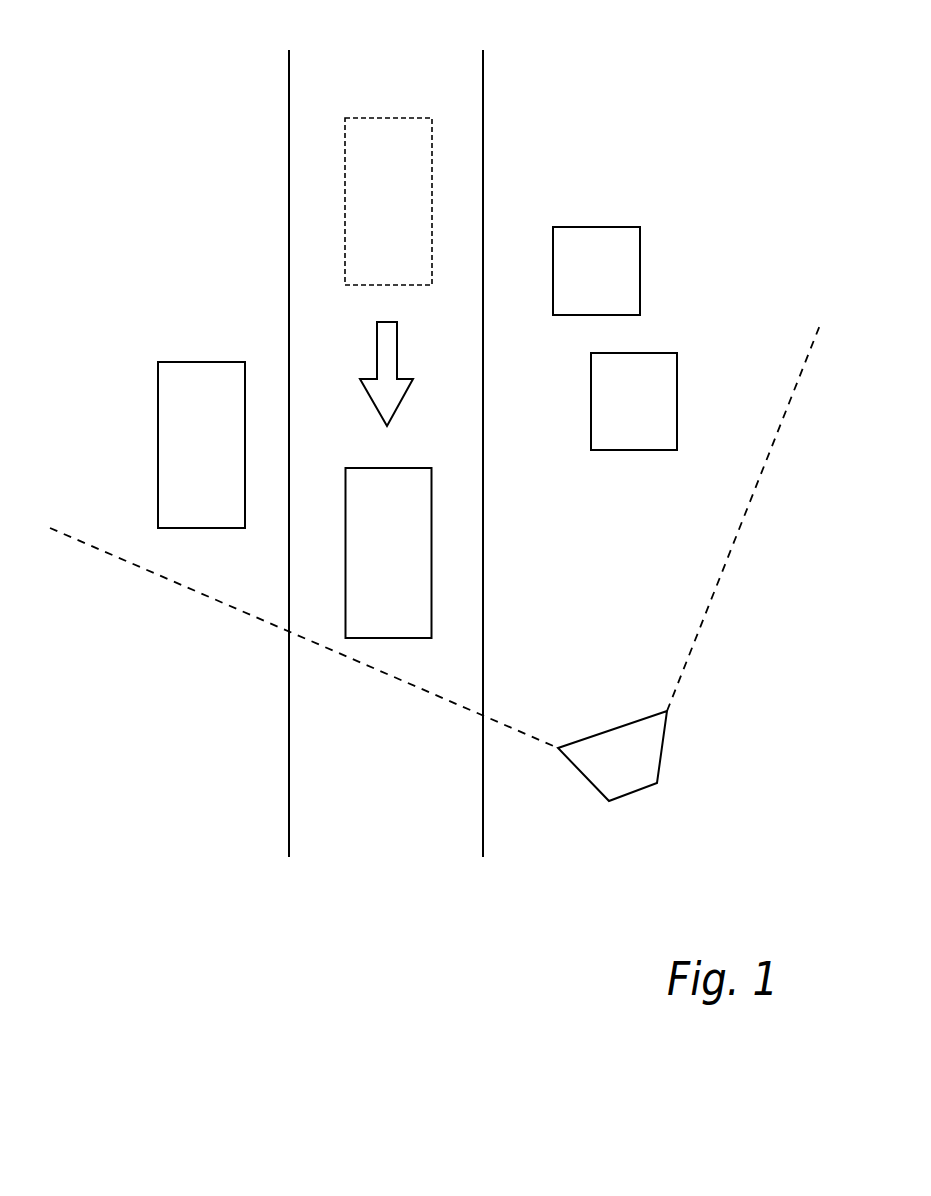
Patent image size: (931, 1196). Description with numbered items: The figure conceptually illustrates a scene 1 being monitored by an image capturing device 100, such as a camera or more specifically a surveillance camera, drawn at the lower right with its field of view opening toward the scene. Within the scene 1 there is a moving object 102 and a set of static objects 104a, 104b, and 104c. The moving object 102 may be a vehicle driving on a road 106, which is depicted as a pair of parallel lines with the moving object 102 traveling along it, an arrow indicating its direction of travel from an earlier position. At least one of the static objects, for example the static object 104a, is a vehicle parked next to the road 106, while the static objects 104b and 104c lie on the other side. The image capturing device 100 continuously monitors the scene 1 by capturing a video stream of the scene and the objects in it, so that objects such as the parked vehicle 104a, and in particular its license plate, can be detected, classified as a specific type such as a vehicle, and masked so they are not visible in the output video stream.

The scene 1 is at (208, 163).
The image capturing device 100 is at (642, 770).
The moving object 102 is at (412, 563).
The static object 104a is at (230, 455).
The static object 104b is at (627, 284).
The static object 104c is at (663, 416).
The road 106 is at (413, 788).